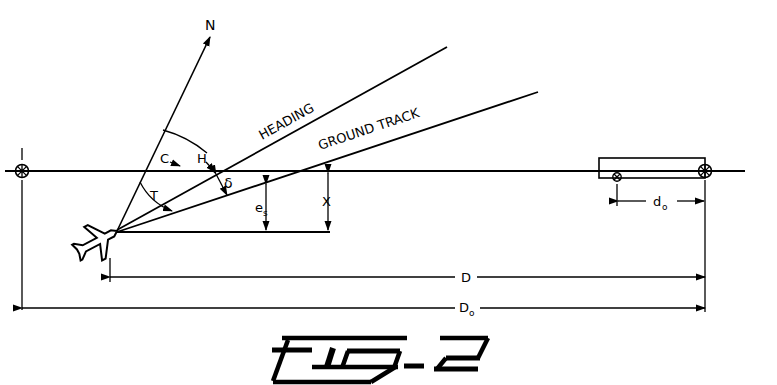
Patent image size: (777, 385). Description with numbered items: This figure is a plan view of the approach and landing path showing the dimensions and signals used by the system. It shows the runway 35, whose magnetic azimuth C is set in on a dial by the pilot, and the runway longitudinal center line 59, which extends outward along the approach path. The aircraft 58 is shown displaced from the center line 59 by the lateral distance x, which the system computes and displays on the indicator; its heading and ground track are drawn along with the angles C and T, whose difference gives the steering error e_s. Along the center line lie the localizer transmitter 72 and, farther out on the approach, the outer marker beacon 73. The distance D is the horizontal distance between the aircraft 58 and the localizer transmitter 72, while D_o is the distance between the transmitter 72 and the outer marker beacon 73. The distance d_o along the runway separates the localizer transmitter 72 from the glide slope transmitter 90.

The outer marker beacon 73 is at (26, 165).
The aircraft 58 is at (114, 247).
The runway longitudinal center line 59 is at (488, 168).
The runway 35 is at (599, 160).
The localizer transmitter 72 is at (710, 166).
The glide slope transmitter 90 is at (610, 183).